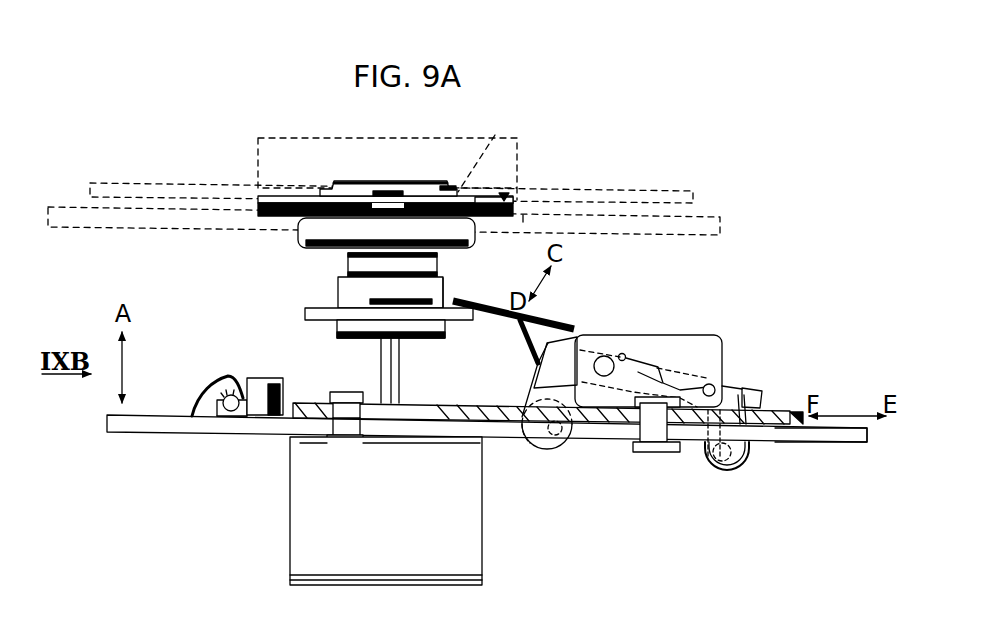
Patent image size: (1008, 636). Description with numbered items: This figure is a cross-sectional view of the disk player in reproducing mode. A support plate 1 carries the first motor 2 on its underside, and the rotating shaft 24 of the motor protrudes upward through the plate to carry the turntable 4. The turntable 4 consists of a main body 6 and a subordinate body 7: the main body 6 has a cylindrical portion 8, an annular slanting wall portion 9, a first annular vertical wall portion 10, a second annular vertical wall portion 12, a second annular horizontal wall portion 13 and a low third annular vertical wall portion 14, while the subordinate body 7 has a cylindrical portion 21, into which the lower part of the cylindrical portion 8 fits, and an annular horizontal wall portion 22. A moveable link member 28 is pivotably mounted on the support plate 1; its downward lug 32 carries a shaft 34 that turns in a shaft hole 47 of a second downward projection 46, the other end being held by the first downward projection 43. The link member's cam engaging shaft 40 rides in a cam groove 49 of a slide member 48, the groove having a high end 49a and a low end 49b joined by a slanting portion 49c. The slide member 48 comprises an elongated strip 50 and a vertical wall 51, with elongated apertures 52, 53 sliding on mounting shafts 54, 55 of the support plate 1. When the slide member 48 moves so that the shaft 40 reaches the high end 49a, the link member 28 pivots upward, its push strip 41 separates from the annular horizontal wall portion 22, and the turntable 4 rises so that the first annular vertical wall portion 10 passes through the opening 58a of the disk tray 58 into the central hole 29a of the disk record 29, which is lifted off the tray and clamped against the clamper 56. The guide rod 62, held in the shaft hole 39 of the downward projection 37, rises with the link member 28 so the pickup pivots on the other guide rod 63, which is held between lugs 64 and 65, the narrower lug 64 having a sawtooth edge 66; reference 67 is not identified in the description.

The support plate 1 is at (152, 415).
The first motor 2 is at (354, 540).
The turntable 4 is at (504, 193).
The main body 6 is at (490, 198).
The subordinate body 7 is at (449, 291).
The cylindrical portion 8 is at (348, 262).
The annular slanting wall portion 9 is at (445, 186).
The first annular vertical wall portion 10 is at (320, 195).
The second annular vertical wall portion 12 is at (298, 230).
The second annular horizontal wall portion 13 is at (255, 214).
The third annular vertical wall portion 14 is at (258, 197).
The cylindrical portion 21 is at (338, 283).
The annular horizontal wall portion 22 is at (305, 312).
The rotating shaft 24 is at (400, 358).
The moveable link member 28 is at (752, 390).
The disk record 29 is at (558, 190).
The central hole 29a is at (490, 151).
The downward lug 32 is at (716, 453).
The shaft 34 is at (720, 455).
The downward projection 37 is at (566, 446).
The shaft hole 39 is at (523, 448).
The cam engaging shaft 40 is at (600, 358).
The push strip 41 is at (461, 300).
The first downward projection 43 is at (748, 458).
The second downward projection 46 is at (712, 449).
The shaft hole 47 is at (729, 470).
The slide member 48 is at (800, 429).
The cam groove 49 is at (642, 371).
The high end 49a is at (623, 353).
The low end 49b is at (716, 394).
The slanting portion 49c is at (657, 370).
The elongated strip 50 is at (499, 403).
The vertical wall 51 is at (680, 335).
The elongated aperture 52 is at (753, 391).
The elongated aperture 53 is at (432, 418).
The mounting shaft 54 is at (712, 388).
The mounting shaft 55 is at (340, 392).
The clamper 56 is at (398, 140).
The disk tray 58 is at (703, 218).
The opening 58a is at (523, 215).
The guide rod 62 is at (558, 448).
The guide rod 63 is at (250, 388).
The lug 64 is at (205, 390).
The lug 65 is at (270, 380).
The sawtooth edge 66 is at (232, 395).
The detent base 67 is at (233, 418).